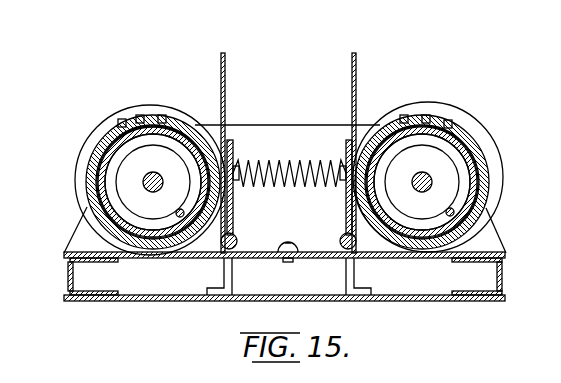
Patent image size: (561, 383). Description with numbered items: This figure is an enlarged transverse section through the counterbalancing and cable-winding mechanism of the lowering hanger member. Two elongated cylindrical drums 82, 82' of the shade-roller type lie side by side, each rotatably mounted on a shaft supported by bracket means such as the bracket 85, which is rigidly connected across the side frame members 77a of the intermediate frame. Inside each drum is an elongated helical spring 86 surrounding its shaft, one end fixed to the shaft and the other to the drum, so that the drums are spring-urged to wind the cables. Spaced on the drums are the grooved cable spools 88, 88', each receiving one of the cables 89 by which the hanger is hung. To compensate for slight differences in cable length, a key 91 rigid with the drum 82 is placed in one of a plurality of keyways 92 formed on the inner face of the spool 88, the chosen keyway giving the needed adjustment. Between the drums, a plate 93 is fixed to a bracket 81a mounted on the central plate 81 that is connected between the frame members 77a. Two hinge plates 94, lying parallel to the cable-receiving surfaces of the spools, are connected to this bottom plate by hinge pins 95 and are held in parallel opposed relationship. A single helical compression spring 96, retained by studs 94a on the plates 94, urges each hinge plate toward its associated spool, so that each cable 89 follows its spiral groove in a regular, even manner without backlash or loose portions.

The side frame member 77a is at (68, 280).
The plate 81 is at (173, 300).
The bracket 81a is at (346, 278).
The drum 82 is at (130, 182).
The drum 82' is at (442, 182).
The bracket 85 is at (80, 235).
The helical spring 86 is at (185, 201).
The cable spool 88 is at (131, 174).
The cable spool 88' is at (443, 167).
The cable 89 is at (225, 58).
The key 91 is at (155, 125).
The keyway 92 is at (138, 124).
The plate 93 is at (310, 252).
The hinge plate 94 is at (230, 218).
The stud 94a is at (242, 173).
The hinge pin 95 is at (237, 238).
The helical compression spring 96 is at (283, 172).